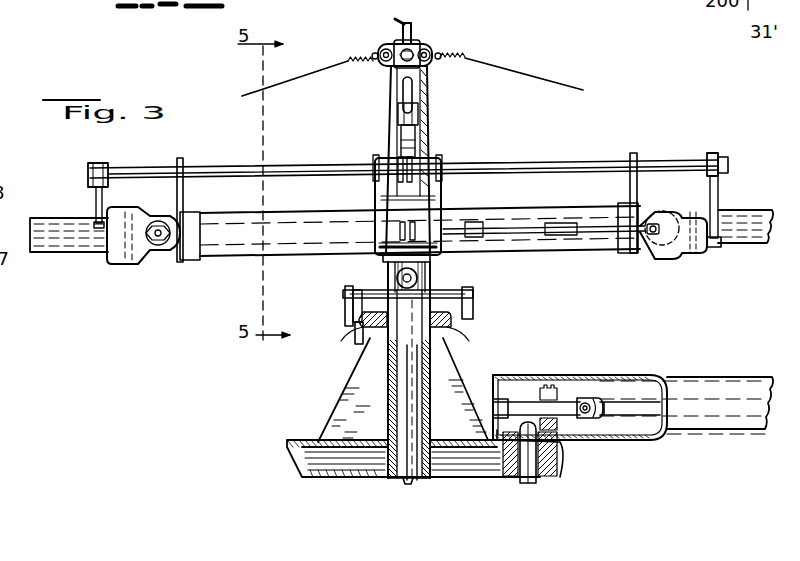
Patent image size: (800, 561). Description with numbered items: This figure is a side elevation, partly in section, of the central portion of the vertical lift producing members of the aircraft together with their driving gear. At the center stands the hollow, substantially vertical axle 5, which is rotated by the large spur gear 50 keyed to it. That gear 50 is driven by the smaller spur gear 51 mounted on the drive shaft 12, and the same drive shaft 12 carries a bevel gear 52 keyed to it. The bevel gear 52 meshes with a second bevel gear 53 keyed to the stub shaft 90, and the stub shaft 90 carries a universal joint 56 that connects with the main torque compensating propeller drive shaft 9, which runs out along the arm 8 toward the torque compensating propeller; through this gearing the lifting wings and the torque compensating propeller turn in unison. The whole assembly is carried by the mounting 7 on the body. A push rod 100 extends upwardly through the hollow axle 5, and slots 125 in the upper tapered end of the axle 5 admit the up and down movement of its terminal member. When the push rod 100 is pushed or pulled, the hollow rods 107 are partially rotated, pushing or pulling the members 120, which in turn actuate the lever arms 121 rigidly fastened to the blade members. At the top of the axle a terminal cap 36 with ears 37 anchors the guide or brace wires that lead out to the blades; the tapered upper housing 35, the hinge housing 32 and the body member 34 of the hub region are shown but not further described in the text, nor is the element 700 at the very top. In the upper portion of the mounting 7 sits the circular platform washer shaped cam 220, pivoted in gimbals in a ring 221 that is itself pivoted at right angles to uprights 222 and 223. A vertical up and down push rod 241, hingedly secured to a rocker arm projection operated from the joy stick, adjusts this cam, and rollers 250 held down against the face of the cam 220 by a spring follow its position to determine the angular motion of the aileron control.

The hook bar 700 is at (379, 23).
The terminal cap 36 is at (435, 42).
The ears 37 is at (384, 50).
The slot 125 is at (417, 95).
The mast 35 is at (425, 141).
The hollow rod 107 is at (303, 168).
The member 120 is at (718, 184).
The housing 34 is at (427, 202).
The universal joint 32 is at (672, 258).
The lever arm 121 is at (722, 248).
The roller 250 is at (425, 282).
The circular platform washer shaped cam 220 is at (365, 292).
The upright 222 is at (345, 308).
The vertical up and down push rod 241 is at (357, 335).
The ring 221 is at (475, 306).
The upright 223 is at (470, 316).
The axle 5 is at (447, 337).
The push rod 100 is at (407, 373).
The mounting 7 is at (452, 380).
The large spur gear 50 is at (312, 440).
The arm 8 is at (693, 386).
The bevel gear 52 is at (557, 446).
The stub shaft 90 is at (563, 405).
The second bevel gear 53 is at (546, 392).
The universal joint 56 is at (588, 397).
The main torque compensating propeller drive shaft 9 is at (638, 406).
The drive shaft 12 is at (536, 481).
The smaller spur gear 51 is at (550, 460).